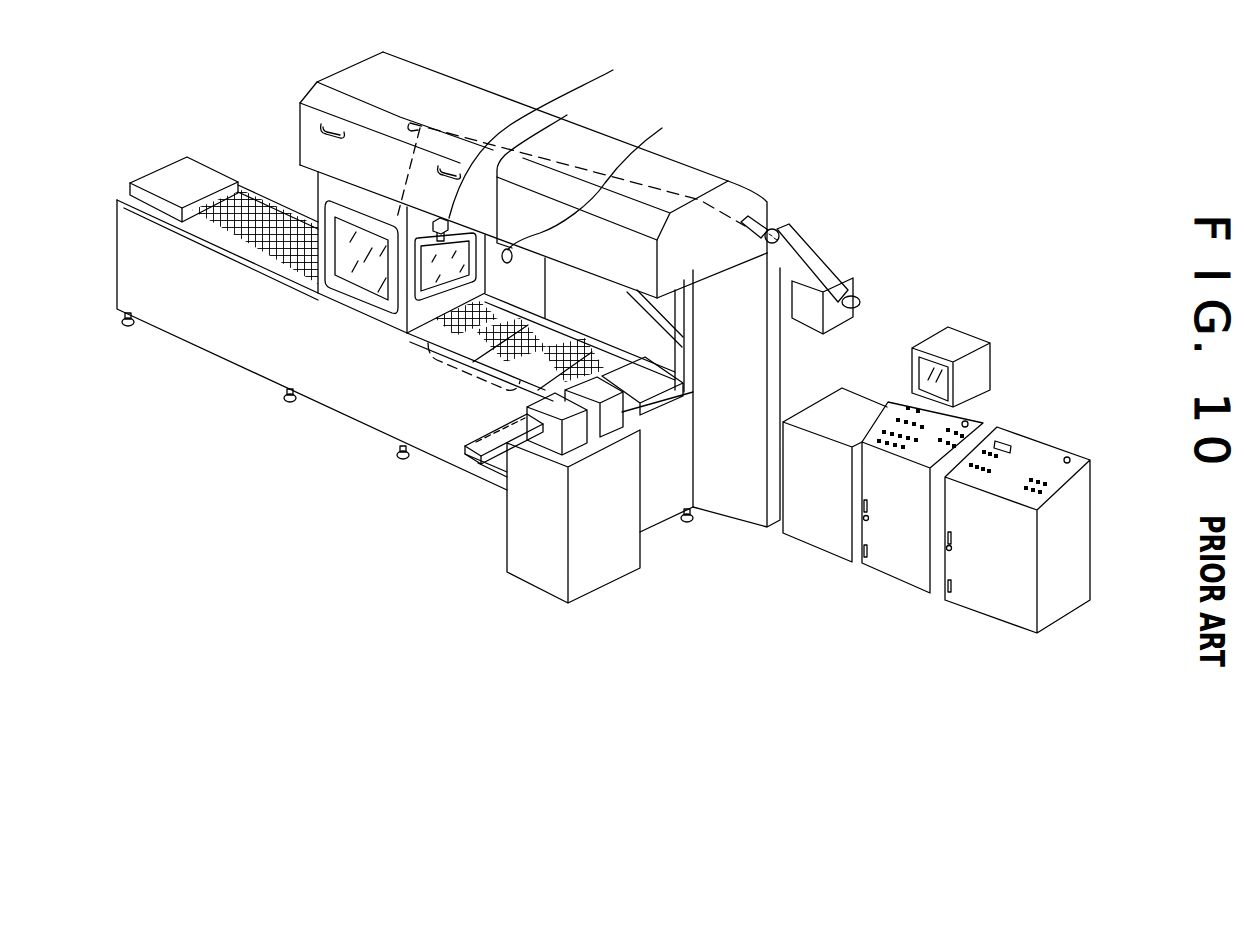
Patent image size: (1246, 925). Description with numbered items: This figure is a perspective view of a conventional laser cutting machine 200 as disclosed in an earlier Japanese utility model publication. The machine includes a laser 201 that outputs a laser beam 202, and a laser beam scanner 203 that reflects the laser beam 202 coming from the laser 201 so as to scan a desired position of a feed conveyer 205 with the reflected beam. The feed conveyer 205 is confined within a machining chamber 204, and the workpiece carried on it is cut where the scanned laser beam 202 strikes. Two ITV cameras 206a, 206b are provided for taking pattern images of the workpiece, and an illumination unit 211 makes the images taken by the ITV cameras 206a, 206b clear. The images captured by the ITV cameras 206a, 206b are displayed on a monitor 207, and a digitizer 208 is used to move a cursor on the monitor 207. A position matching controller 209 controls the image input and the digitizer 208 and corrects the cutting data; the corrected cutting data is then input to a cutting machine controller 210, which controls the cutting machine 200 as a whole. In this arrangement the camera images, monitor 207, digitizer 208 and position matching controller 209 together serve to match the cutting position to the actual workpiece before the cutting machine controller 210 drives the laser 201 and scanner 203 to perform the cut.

The cutting machine 200 is at (826, 109).
The laser 201 is at (818, 251).
The laser beam 202 is at (680, 186).
The laser beam scanner 203 is at (420, 126).
The machining chamber 204 is at (325, 203).
The feed conveyer 205 is at (242, 247).
The ITV camera 206a is at (555, 144).
The ITV camera 206b is at (613, 184).
The monitor 207 is at (612, 421).
The digitizer 208 is at (468, 448).
The position matching controller 209 is at (575, 445).
The cutting machine controller 210 is at (972, 414).
The illumination unit 211 is at (432, 360).